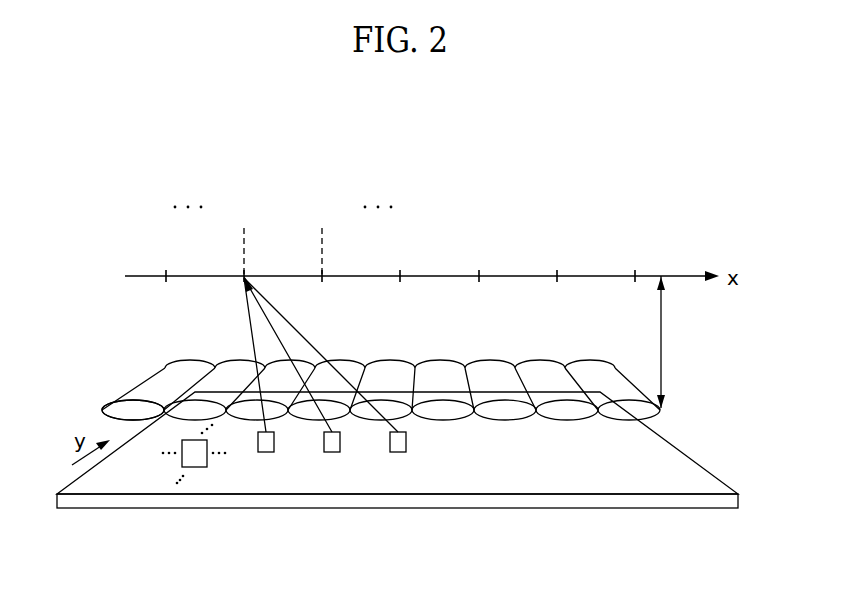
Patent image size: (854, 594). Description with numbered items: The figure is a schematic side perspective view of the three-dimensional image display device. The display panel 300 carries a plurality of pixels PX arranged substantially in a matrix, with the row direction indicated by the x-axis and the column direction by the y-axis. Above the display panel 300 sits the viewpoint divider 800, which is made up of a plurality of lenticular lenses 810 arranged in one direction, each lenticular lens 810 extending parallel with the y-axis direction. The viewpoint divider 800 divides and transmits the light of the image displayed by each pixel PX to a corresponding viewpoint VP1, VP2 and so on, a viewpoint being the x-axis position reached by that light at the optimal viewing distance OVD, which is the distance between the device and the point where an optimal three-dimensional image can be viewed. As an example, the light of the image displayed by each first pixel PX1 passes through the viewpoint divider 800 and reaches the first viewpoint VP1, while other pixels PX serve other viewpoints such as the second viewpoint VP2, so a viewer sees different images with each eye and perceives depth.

The display panel 300 is at (698, 511).
The viewpoint divider 800 is at (662, 416).
The lenticular lens 810 is at (103, 410).
The pixel PX is at (194, 454).
The first pixel PX1 is at (398, 452).
The first viewpoint VP1 is at (243, 236).
The second viewpoint VP2 is at (321, 236).
The optimal viewing distance OVD is at (682, 342).